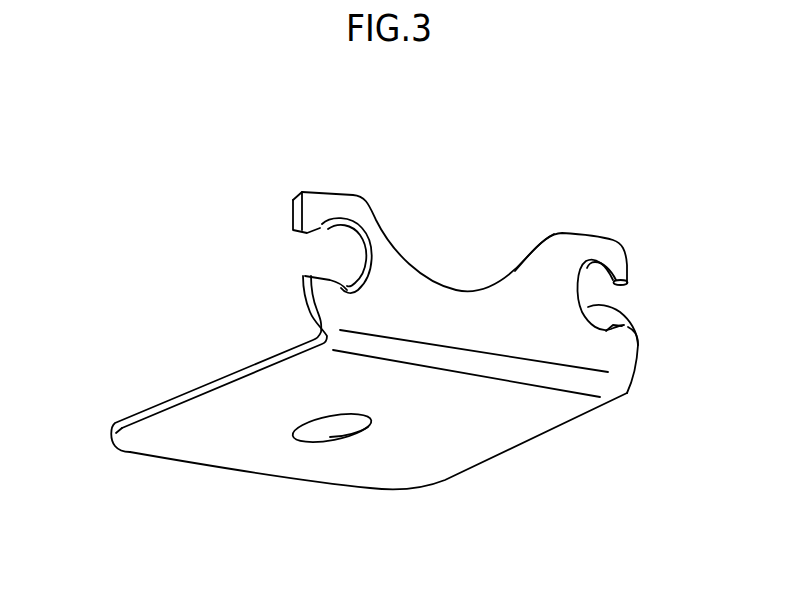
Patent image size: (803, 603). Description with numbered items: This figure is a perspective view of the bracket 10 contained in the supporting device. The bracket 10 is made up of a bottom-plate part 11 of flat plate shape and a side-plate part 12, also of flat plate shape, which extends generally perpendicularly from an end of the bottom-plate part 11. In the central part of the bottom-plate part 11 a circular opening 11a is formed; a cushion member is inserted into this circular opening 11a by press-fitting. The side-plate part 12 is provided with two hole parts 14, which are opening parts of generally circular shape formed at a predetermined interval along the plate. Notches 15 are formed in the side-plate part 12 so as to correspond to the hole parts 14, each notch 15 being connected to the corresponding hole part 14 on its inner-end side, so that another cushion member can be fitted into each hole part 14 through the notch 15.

The bracket 10 is at (548, 155).
The bottom-plate part 11 is at (150, 443).
The circular opening 11a is at (347, 435).
The side-plate part 12 is at (468, 307).
The hole part 14 is at (362, 247).
The notch 15 is at (328, 262).